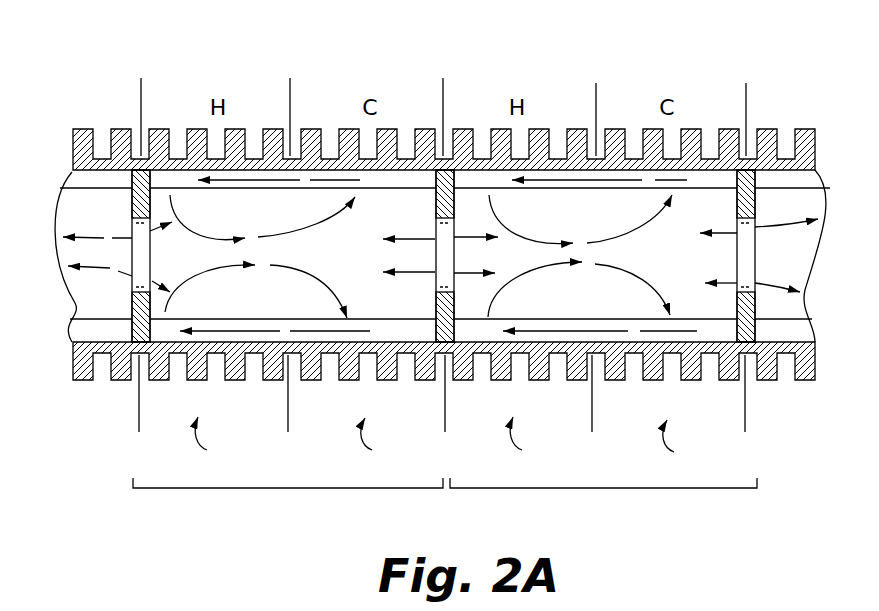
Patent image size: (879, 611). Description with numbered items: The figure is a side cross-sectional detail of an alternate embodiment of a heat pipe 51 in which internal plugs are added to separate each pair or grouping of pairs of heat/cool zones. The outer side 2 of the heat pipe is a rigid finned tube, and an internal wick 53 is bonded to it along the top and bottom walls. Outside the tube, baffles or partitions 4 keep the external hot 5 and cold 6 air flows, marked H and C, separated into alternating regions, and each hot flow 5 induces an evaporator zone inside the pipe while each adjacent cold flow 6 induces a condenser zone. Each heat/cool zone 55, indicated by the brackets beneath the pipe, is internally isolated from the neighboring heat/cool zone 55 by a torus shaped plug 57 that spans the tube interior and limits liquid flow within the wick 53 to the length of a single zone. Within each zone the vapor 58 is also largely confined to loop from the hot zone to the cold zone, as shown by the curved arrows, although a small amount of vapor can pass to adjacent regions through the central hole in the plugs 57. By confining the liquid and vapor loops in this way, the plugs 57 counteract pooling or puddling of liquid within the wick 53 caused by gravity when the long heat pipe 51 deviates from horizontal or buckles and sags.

The outer side 2 is at (73, 128).
The baffles or partitions 4 is at (141, 92).
The hot flow 5 is at (362, 442).
The cold flow 6 is at (522, 444).
The heat pipe 51 is at (681, 44).
The wick 53 is at (72, 174).
The heat/cool zone 55 is at (277, 488).
The torus shaped plug 57 is at (132, 210).
The vapor 58 is at (336, 282).